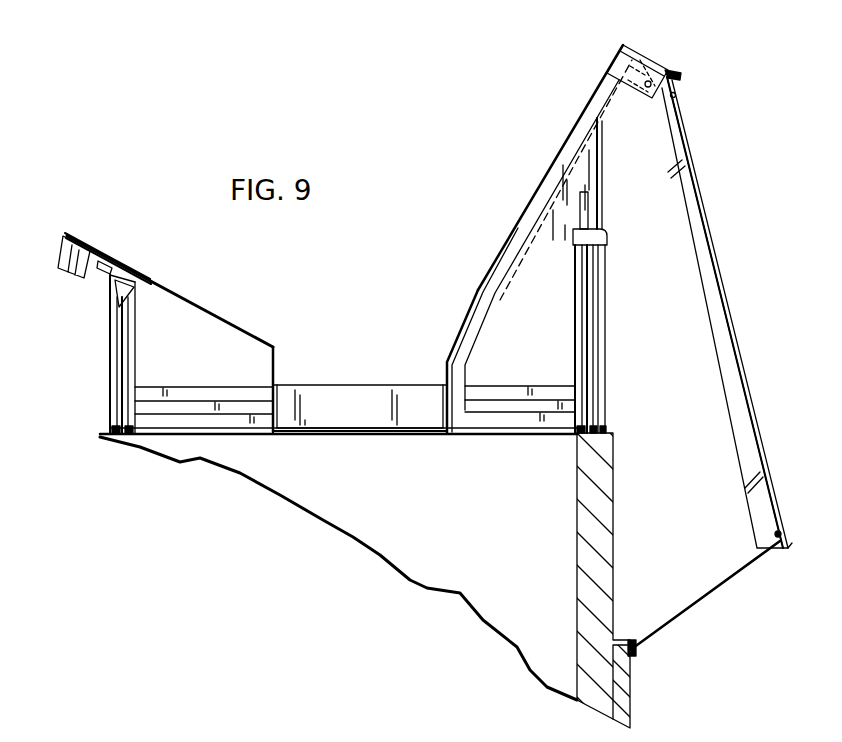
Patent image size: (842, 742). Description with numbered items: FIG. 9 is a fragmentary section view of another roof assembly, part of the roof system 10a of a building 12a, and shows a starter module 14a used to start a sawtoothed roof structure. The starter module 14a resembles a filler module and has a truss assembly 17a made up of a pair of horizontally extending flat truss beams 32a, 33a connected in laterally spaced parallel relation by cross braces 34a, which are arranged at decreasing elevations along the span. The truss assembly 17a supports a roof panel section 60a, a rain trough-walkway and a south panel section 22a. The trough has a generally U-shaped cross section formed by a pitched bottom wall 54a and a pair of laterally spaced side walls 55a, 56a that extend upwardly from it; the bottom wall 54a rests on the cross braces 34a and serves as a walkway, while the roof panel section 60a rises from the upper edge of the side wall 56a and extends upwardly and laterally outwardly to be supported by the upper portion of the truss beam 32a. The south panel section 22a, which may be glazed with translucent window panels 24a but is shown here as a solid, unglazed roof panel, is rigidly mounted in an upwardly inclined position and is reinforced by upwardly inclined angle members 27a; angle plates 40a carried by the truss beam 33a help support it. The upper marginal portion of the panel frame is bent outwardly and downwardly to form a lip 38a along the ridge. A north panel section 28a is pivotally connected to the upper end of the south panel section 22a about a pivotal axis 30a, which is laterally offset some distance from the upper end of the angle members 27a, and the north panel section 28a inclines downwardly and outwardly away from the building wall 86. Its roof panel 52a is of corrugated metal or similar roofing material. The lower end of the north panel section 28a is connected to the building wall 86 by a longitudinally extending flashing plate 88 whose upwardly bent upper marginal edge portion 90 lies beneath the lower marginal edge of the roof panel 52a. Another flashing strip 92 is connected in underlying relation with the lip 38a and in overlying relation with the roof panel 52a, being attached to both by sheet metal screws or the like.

The roof system 10a is at (318, 285).
The building 12a is at (627, 712).
The starter module 14a is at (505, 238).
The truss assembly 17a is at (88, 333).
The south panel section 22a is at (458, 322).
The window panel 24a is at (568, 138).
The angle member 27a is at (501, 290).
The north panel section 28a is at (722, 318).
The pivotal axis 30a is at (649, 80).
The truss beam 32a is at (109, 401).
The truss beam 33a is at (606, 360).
The cross brace 34a is at (503, 413).
The lip 38a is at (631, 46).
The angle plate 40a is at (593, 198).
The roof panel 52a is at (765, 455).
The bottom wall 54a is at (363, 419).
The side wall 55a is at (276, 405).
The side wall 56a is at (448, 405).
The roof panel section 60a is at (231, 323).
The building wall 86 is at (600, 557).
The flashing plate 88 is at (705, 596).
The upper marginal edge portion 90 is at (786, 538).
The flashing strip 92 is at (681, 73).